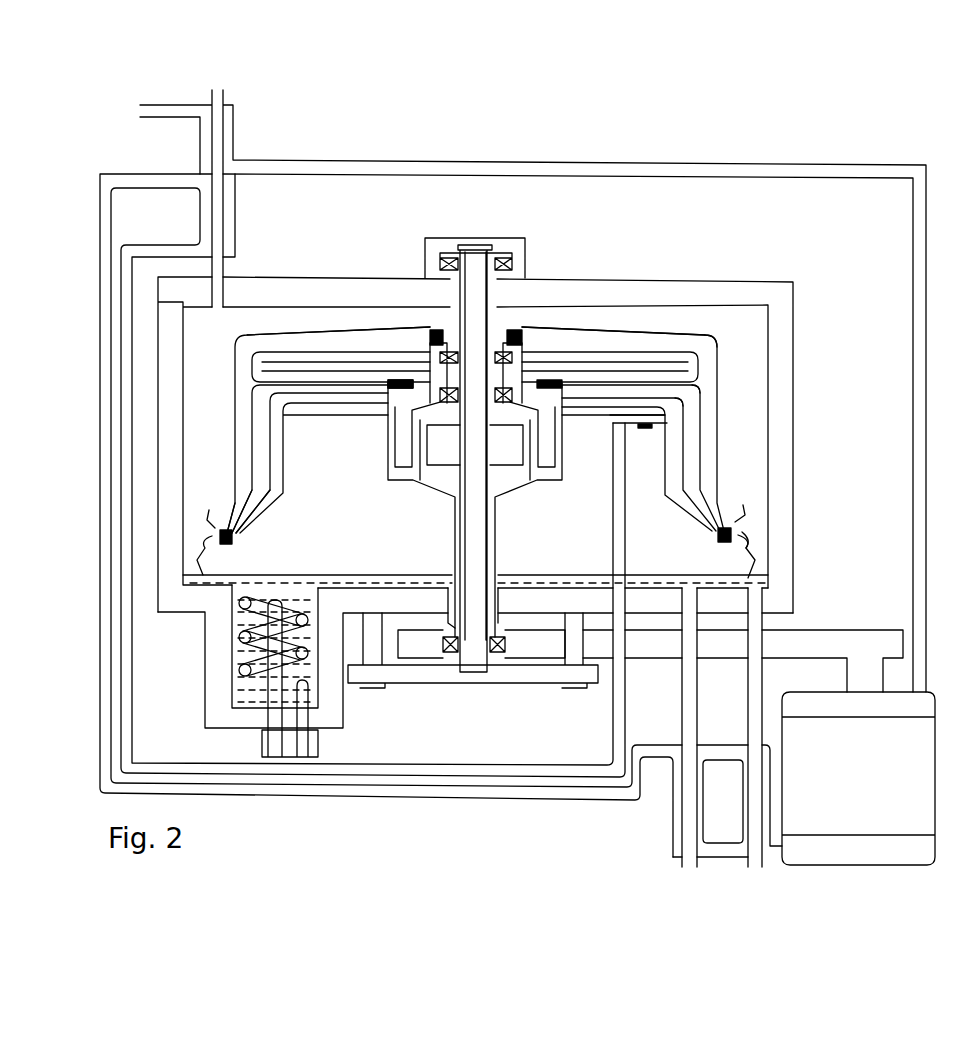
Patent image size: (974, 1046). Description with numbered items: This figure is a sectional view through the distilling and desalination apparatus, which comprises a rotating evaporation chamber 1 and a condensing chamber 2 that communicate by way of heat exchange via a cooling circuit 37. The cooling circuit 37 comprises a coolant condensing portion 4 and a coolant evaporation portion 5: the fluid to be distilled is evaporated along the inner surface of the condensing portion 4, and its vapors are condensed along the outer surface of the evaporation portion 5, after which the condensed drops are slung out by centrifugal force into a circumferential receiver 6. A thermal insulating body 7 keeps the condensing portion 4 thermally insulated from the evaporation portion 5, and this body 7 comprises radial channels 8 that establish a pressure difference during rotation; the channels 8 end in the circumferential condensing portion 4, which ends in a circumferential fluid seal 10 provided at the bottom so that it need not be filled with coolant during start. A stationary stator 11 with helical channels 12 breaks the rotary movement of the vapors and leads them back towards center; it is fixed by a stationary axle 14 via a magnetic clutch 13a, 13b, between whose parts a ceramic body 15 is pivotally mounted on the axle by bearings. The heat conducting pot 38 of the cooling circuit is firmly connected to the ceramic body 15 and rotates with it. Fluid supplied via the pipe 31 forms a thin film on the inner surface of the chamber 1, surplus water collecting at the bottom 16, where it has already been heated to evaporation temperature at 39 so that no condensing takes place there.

The evaporation chamber 1 is at (313, 463).
The condensing chamber 2 is at (200, 372).
The condensing portion 4 is at (673, 462).
The evaporation portion 5 is at (708, 437).
The circumferential receiver 6 is at (757, 543).
The thermal insulating body 7 is at (704, 397).
The channels 8 is at (690, 410).
The fluid seal 10 is at (212, 530).
The stator 11 is at (668, 358).
The helical channels 12 is at (713, 340).
The magnetic clutch part 13a is at (510, 430).
The magnetic clutch part 13b is at (550, 420).
The stationary axle 14 is at (470, 255).
The ceramic body 15 is at (410, 378).
The bottom 16 is at (222, 587).
The pipe 31 is at (793, 572).
The cooling circuit 37 is at (199, 438).
The heat conducting pot 38 is at (263, 518).
The heating location 39 is at (242, 672).